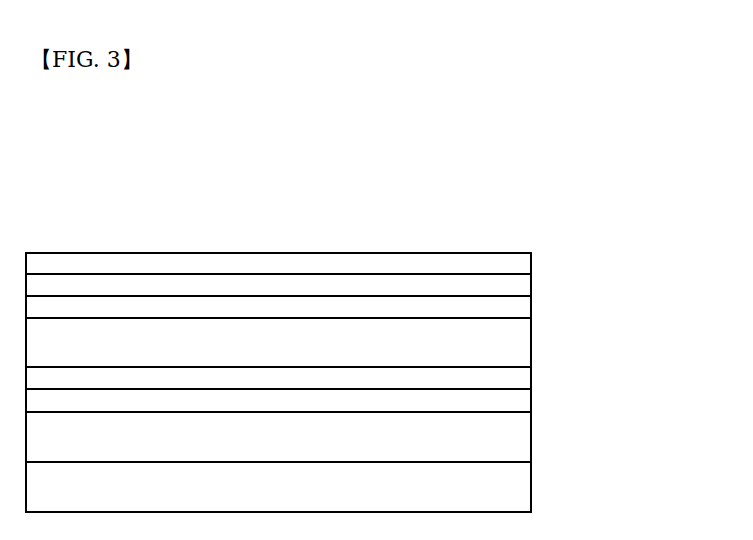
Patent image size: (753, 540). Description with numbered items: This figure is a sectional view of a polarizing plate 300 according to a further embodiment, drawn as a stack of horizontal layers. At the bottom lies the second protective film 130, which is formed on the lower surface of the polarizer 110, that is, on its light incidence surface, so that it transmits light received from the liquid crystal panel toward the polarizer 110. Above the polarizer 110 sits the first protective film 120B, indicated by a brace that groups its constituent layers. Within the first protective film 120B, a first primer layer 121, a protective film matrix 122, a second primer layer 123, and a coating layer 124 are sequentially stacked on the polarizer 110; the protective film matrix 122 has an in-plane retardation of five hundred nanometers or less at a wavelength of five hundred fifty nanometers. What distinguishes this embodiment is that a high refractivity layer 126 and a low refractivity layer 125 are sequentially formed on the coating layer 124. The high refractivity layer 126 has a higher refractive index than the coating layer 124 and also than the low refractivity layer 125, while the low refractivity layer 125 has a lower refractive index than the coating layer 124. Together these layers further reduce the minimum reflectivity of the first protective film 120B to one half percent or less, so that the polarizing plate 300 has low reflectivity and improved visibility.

The polarizing plate 300 is at (560, 227).
The first protective film 120B is at (620, 245).
The low refractivity layer 125 is at (520, 263).
The high refractivity layer 126 is at (520, 284).
The coating layer 124 is at (520, 308).
The second primer layer 123 is at (520, 342).
The protective film matrix 122 is at (520, 380).
The first primer layer 121 is at (520, 402).
The polarizer 110 is at (520, 437).
The second protective film 130 is at (520, 485).